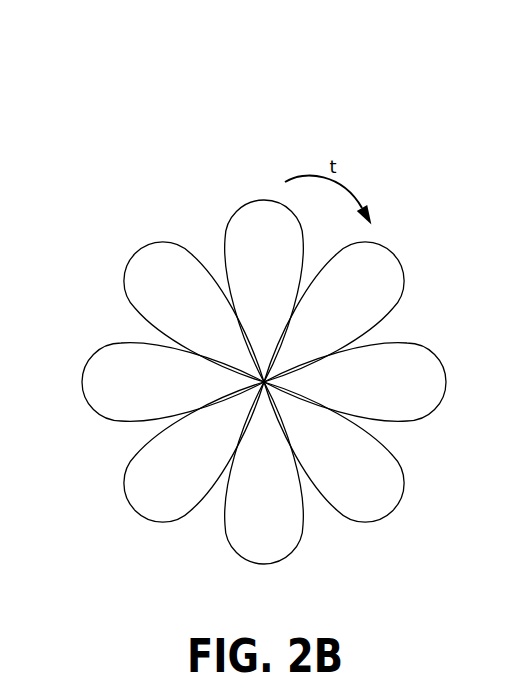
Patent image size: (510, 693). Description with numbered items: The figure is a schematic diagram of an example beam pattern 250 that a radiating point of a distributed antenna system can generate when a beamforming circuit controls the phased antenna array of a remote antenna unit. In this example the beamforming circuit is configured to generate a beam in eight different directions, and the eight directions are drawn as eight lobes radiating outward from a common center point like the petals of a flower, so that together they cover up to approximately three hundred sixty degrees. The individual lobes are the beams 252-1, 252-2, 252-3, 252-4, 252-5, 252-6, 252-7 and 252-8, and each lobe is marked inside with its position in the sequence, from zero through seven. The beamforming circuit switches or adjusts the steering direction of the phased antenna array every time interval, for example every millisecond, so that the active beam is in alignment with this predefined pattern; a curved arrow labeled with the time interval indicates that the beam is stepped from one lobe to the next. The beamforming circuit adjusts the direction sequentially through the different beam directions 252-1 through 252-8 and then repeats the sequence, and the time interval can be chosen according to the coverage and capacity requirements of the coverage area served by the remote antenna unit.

The beam pattern 250 is at (170, 95).
The beam 252-1 is at (341, 309).
The beam 252-2 is at (377, 368).
The beam 252-3 is at (343, 446).
The beam 252-4 is at (287, 492).
The beam 252-5 is at (199, 465).
The beam 252-6 is at (148, 373).
The beam 252-7 is at (183, 309).
The beam 252-8 is at (242, 274).